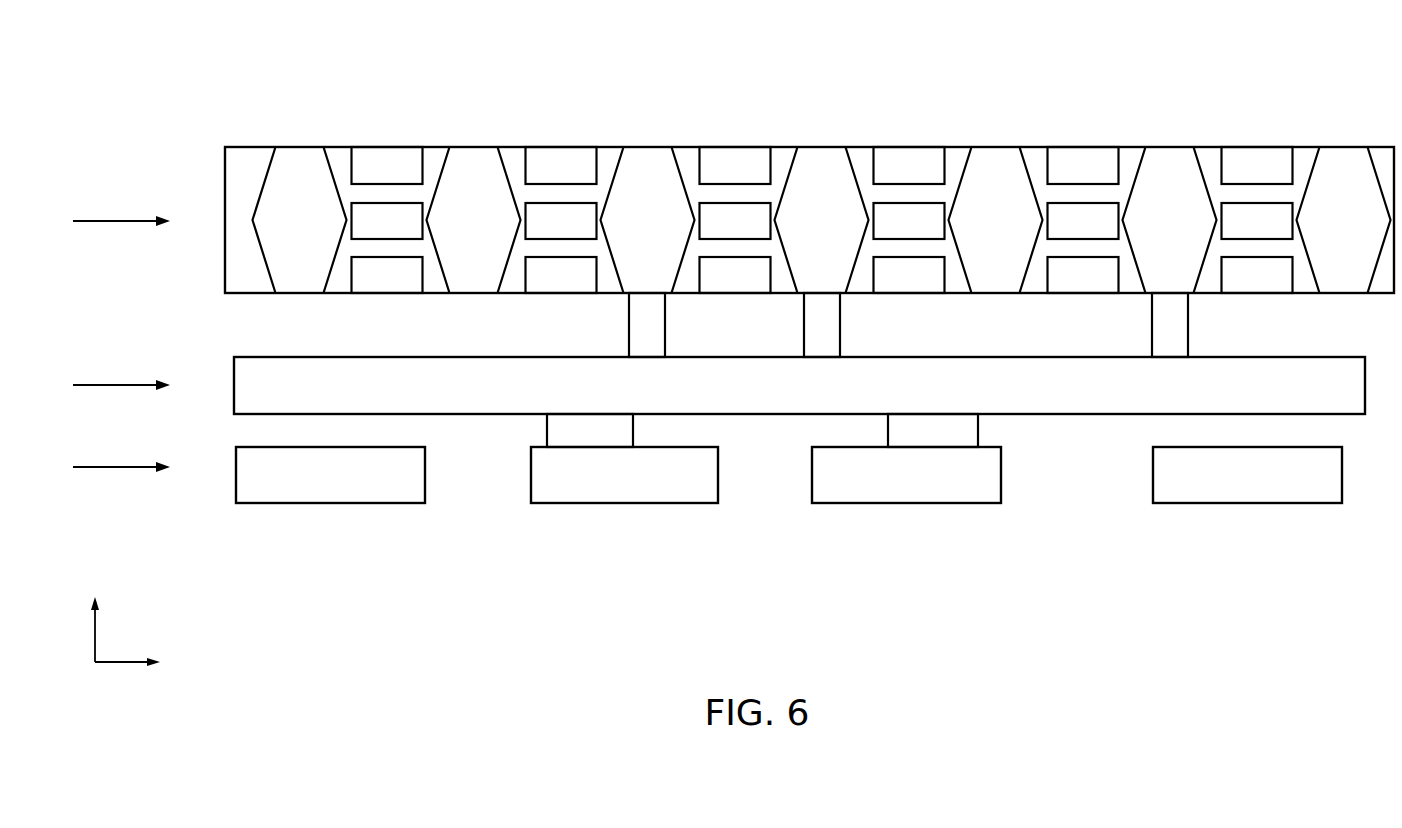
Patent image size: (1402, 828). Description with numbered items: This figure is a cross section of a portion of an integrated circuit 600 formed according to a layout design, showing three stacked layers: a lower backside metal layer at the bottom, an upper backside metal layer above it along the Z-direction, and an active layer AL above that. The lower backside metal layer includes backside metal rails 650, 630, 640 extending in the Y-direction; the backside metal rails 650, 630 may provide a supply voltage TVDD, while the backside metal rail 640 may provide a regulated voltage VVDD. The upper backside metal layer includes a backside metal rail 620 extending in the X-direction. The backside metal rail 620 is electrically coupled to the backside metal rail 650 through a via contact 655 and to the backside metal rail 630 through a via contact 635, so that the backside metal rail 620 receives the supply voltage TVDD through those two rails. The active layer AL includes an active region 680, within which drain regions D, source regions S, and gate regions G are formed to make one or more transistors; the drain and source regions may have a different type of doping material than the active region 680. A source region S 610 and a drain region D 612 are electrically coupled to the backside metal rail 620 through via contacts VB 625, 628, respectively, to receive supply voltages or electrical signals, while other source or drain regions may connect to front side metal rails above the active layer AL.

The integrated circuit 600 is at (166, 59).
The active region 680 is at (243, 155).
The gate region G is at (562, 157).
The source region 610 is at (653, 157).
The drain region 612 is at (821, 157).
The backside metal rail 620 is at (822, 401).
The via contact VB 625 is at (629, 323).
The via contact VB 628 is at (840, 323).
The backside metal rail 630 is at (902, 503).
The via contact BV0 635 is at (978, 430).
The backside metal rail 640 is at (1247, 503).
The backside metal rail 650 is at (622, 503).
The via contact BV0 655 is at (547, 431).